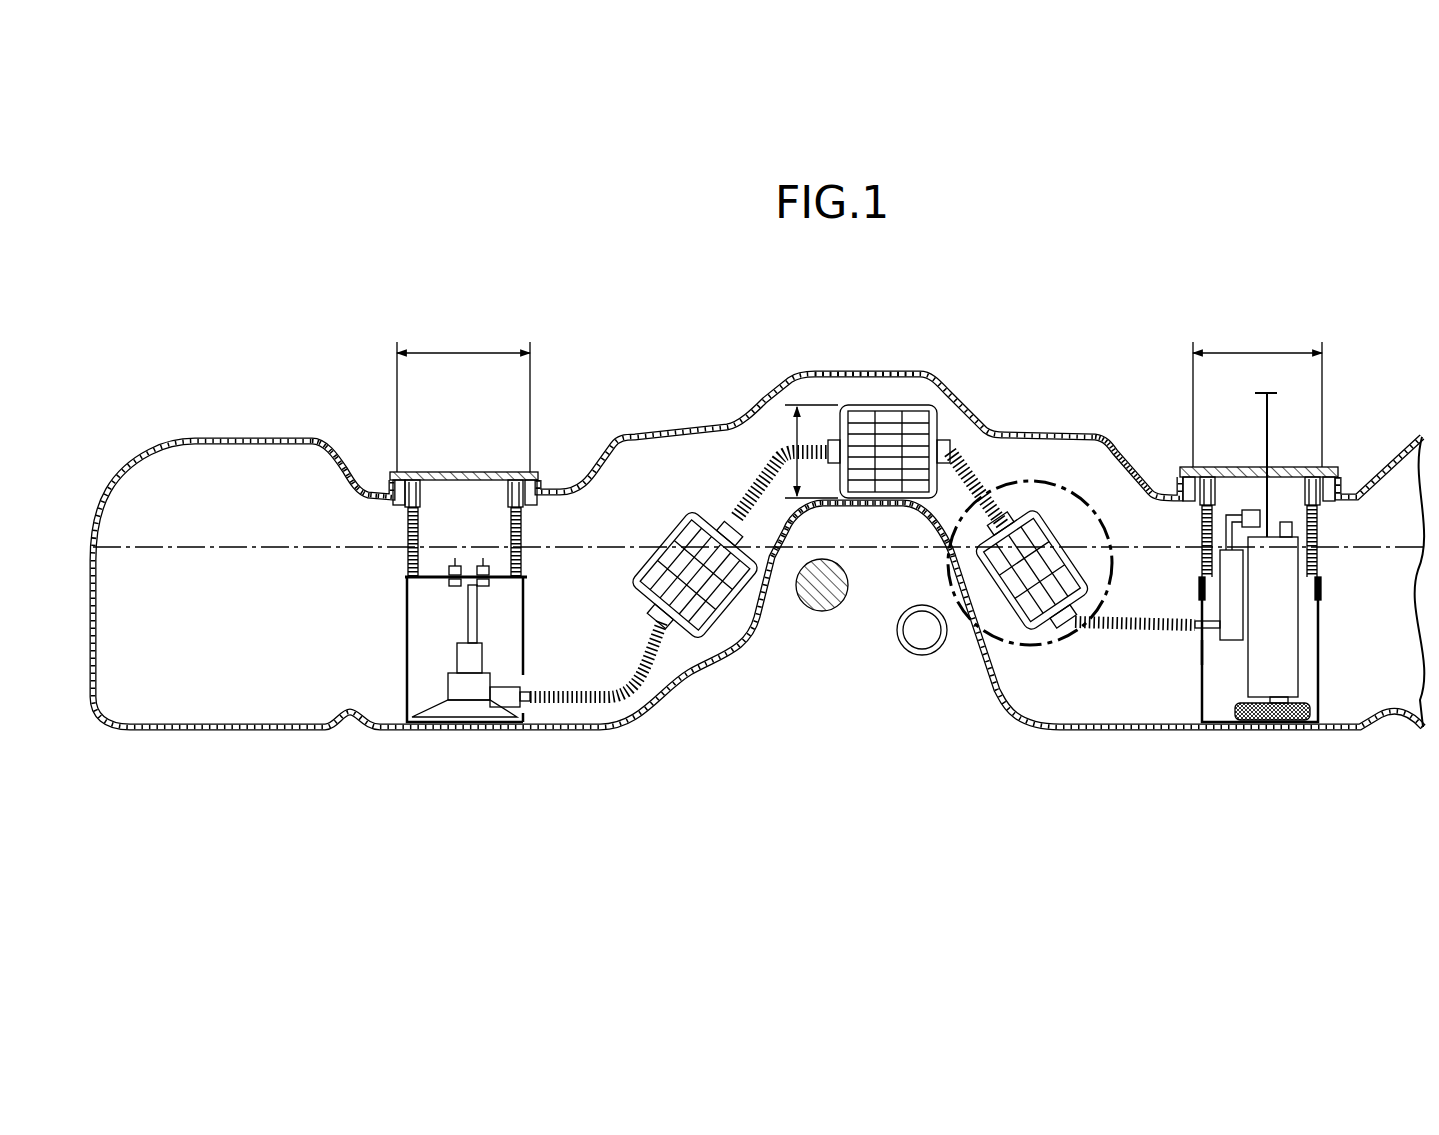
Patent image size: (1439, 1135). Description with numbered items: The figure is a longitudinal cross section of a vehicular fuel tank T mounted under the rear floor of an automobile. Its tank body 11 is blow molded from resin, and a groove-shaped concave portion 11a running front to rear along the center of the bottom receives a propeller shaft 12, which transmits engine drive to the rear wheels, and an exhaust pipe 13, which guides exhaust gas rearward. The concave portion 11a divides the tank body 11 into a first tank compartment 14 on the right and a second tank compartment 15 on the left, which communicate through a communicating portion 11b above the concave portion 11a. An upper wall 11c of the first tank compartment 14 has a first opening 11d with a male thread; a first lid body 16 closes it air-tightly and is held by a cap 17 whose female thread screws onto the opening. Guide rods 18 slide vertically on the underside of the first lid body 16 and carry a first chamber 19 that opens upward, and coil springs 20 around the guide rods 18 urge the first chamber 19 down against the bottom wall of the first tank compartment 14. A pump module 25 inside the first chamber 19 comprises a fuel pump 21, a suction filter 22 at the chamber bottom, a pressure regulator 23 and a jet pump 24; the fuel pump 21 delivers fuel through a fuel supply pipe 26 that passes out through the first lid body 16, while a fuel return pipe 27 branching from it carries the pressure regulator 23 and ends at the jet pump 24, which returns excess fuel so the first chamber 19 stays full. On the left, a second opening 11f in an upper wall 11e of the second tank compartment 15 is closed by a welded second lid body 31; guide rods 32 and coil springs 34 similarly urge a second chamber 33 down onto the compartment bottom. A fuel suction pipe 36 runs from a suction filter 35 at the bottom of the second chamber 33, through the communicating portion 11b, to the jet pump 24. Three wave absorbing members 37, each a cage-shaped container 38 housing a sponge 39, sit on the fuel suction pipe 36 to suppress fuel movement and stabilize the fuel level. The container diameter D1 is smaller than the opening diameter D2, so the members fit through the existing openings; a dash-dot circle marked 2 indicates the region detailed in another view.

The fuel tank T is at (1012, 340).
The region shown in FIG. 2 is at (1012, 655).
The tank body 11 is at (690, 432).
The concave portion 11a is at (765, 628).
The communicating portion 11b is at (903, 383).
The upper wall 11c is at (1148, 452).
The first opening 11d is at (1302, 466).
The upper wall 11e is at (378, 466).
The second opening 11f is at (513, 470).
The propeller shaft 12 is at (825, 612).
The exhaust pipe 13 is at (922, 660).
The first tank compartment 14 is at (1392, 617).
The second tank compartment 15 is at (257, 627).
The first lid body 16 is at (1258, 467).
The cap 17 is at (1195, 467).
The guide rods 18 is at (1207, 560).
The first chamber 19 is at (1320, 655).
The coil springs 20 is at (1200, 520).
The fuel pump 21 is at (1290, 629).
The suction filter 22 is at (1272, 722).
The pressure regulator 23 is at (1251, 515).
The jet pump 24 is at (1230, 640).
The pump module 25 is at (1213, 652).
The fuel supply pipe 26 is at (1262, 412).
The fuel return pipe 27 is at (1238, 545).
The second lid body 31 is at (458, 470).
The guide rods 32 is at (418, 522).
The second chamber 33 is at (405, 635).
The coil springs 34 is at (410, 522).
The suction filter 35 is at (462, 708).
The fuel suction pipe 36 is at (635, 662).
The wave absorbing members 37 is at (845, 504).
The container 38 is at (648, 568).
The sponge 39 is at (652, 590).
The diameter of the container D1 is at (792, 432).
The diameter of the openings D2 is at (464, 352).